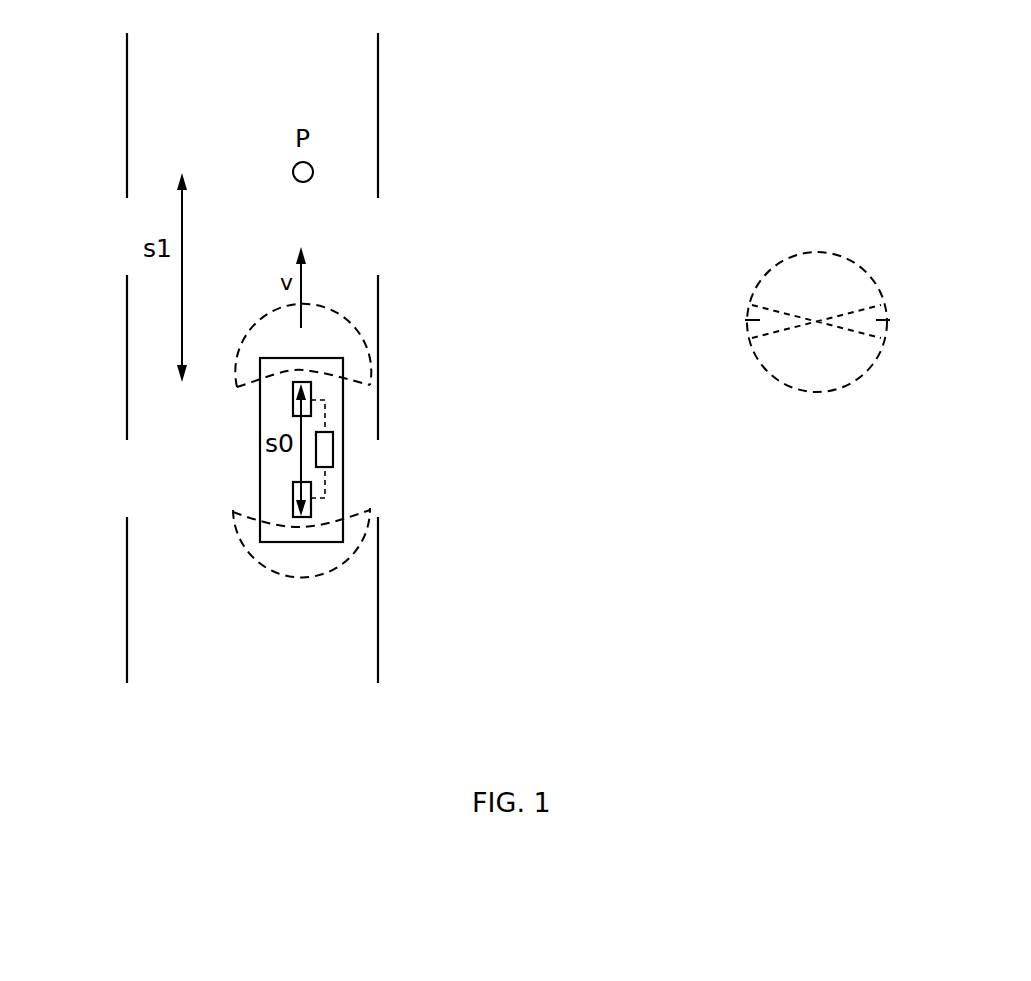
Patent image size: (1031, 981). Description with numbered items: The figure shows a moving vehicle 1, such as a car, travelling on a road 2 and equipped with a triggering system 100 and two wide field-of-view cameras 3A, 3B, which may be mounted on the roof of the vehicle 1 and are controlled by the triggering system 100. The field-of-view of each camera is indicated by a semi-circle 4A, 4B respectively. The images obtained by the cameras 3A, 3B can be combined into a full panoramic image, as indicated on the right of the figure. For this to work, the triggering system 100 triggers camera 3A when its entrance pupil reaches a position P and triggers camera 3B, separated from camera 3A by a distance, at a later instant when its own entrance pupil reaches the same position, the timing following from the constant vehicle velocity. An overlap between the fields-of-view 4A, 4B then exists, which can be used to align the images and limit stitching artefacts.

The moving vehicle 1 is at (260, 422).
The road 2 is at (353, 641).
The camera 3A is at (311, 395).
The camera 3B is at (293, 496).
The semi-circle 4A is at (335, 310).
The semi-circle 4B is at (297, 595).
The triggering system 100 is at (333, 453).